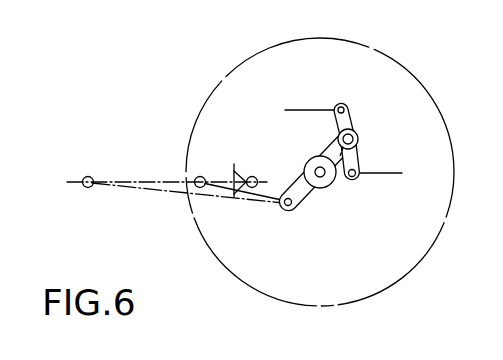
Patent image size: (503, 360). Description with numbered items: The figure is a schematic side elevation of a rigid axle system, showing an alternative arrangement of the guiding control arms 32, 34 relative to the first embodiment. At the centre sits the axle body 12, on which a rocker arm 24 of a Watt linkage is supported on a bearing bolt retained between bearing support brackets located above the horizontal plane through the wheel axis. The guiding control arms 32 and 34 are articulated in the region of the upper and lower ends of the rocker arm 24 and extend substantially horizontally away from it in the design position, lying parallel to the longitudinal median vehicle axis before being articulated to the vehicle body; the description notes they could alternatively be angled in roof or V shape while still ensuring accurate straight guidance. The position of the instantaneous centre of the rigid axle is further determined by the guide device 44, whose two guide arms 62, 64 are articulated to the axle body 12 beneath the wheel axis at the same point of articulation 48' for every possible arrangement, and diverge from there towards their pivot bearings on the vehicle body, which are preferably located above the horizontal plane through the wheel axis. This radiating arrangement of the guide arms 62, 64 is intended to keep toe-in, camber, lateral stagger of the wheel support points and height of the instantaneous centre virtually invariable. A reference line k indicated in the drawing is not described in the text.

The axle body 12 is at (310, 160).
The rocker arm 24 is at (356, 159).
The guiding control arm 32 is at (309, 110).
The guiding control arm 34 is at (384, 174).
The guide device 44 is at (174, 194).
The point of articulation 48' is at (317, 192).
The guide arm 62 is at (271, 194).
The guide arm 64 is at (252, 182).
The reference line k is at (78, 190).